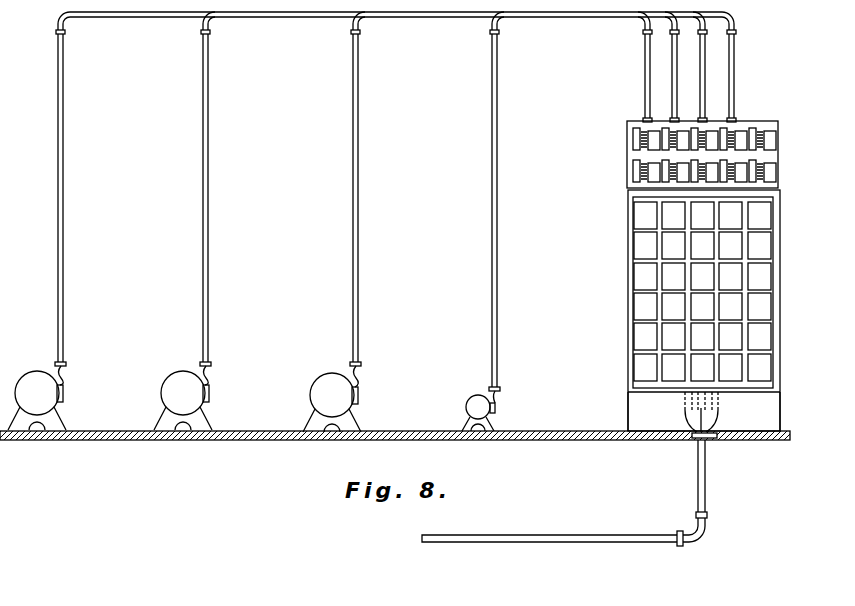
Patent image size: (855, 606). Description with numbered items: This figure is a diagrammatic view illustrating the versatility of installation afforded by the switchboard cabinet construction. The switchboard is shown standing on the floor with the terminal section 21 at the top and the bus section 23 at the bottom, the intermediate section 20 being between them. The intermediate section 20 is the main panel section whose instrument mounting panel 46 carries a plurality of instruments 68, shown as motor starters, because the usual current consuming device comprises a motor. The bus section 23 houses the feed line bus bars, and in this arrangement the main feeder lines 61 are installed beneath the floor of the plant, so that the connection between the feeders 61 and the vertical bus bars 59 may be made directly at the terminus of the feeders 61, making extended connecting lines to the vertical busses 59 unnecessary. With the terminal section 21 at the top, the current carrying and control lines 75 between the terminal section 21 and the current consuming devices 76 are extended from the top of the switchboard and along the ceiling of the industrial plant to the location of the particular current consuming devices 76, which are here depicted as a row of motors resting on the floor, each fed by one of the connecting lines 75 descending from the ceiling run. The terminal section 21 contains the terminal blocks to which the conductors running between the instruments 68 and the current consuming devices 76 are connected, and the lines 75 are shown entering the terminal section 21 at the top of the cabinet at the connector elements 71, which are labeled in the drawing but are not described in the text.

The connecting lines 75 is at (590, 17).
The valve connectors 71 is at (638, 143).
The terminal section 21 is at (631, 155).
The instrument mounting panel 46 is at (632, 215).
The instruments 68 is at (640, 247).
The intermediate section 20 is at (626, 297).
The bus section 23 is at (645, 410).
The vertical bus bars 59 is at (719, 405).
The feeder lines 61 is at (706, 459).
The current consuming devices 76 is at (358, 395).